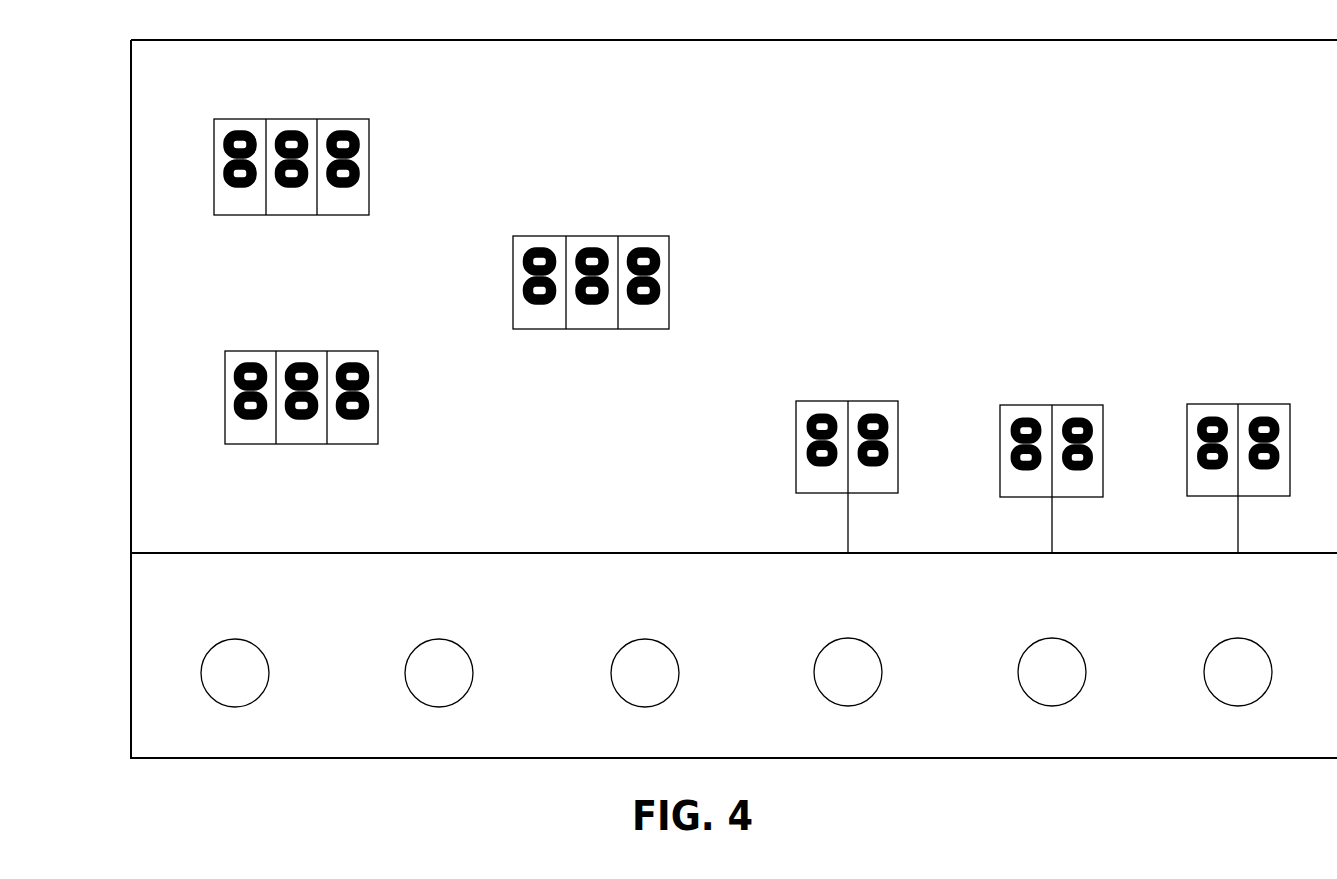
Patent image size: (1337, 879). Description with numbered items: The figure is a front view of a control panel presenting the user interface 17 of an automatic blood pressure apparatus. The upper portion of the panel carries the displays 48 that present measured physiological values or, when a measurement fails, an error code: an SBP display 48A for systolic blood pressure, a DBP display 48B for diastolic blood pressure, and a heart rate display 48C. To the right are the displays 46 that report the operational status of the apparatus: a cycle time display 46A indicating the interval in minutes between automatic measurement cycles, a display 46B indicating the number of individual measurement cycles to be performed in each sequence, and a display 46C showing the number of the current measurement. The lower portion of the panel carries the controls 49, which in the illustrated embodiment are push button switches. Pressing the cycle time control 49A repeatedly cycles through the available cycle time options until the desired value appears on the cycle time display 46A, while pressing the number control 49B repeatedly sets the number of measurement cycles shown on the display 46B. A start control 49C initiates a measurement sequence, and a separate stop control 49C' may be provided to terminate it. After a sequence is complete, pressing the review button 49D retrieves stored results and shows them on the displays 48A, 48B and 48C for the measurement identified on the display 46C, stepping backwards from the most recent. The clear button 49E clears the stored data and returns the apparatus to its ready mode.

The user interface 17 is at (1187, 57).
The displays 46 is at (896, 318).
The cycle time display 46A is at (1018, 487).
The number of cycles display 46B is at (1217, 488).
The reading number display 46C is at (818, 485).
The displays 48 is at (515, 470).
The SBP display 48A is at (366, 176).
The DBP display 48B is at (375, 380).
The heart rate display 48C is at (660, 295).
The controls 49 is at (140, 657).
The cycle time control 49A is at (1030, 678).
The number control 49B is at (1230, 692).
The start control 49C is at (267, 661).
The stop control 49C' is at (471, 663).
The review button 49D is at (827, 688).
The clear button 49E is at (628, 688).